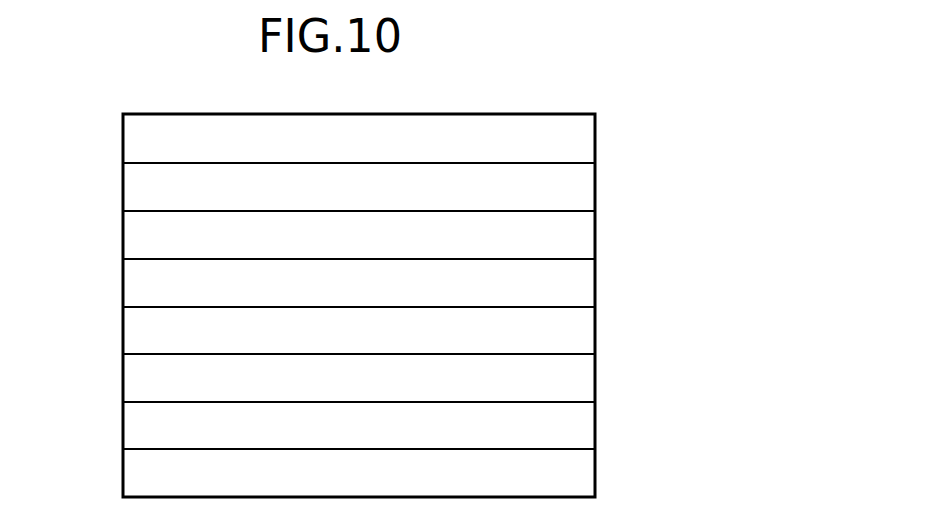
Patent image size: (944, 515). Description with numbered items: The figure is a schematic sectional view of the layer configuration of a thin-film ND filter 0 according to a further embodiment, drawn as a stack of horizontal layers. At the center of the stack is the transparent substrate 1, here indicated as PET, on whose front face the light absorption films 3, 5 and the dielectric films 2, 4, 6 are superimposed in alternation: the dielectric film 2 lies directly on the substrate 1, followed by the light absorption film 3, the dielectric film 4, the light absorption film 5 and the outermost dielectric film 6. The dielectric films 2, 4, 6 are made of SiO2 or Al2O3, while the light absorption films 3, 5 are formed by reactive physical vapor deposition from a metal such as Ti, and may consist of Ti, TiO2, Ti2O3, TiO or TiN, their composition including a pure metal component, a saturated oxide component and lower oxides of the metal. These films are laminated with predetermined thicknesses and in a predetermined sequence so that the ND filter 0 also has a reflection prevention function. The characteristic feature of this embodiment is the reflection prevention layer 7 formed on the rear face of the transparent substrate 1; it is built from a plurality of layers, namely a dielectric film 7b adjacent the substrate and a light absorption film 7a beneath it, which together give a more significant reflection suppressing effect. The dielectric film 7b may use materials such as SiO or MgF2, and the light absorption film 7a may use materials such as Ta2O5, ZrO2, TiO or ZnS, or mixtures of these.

The ND filter 0 is at (331, 112).
The transparent substrate 1 is at (123, 380).
The dielectric film 2 is at (123, 333).
The light absorption film 3 is at (123, 285).
The dielectric film 4 is at (123, 237).
The light absorption film 5 is at (123, 190).
The dielectric film 6 is at (123, 142).
The reflection prevention layer 7 is at (374, 449).
The light absorption film 7a is at (595, 467).
The dielectric film 7b is at (595, 425).